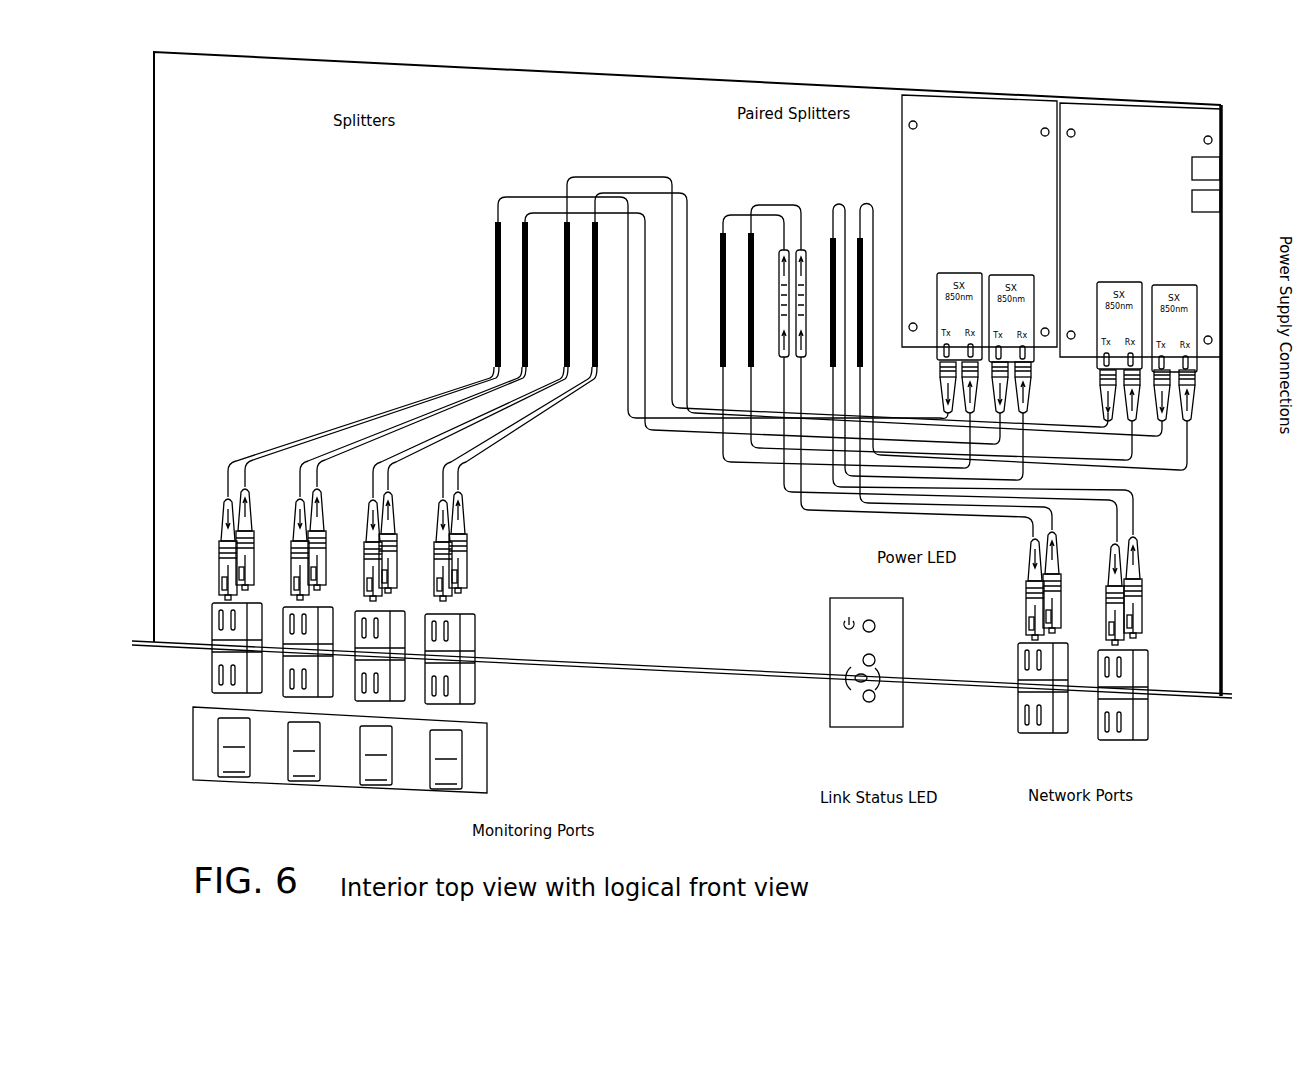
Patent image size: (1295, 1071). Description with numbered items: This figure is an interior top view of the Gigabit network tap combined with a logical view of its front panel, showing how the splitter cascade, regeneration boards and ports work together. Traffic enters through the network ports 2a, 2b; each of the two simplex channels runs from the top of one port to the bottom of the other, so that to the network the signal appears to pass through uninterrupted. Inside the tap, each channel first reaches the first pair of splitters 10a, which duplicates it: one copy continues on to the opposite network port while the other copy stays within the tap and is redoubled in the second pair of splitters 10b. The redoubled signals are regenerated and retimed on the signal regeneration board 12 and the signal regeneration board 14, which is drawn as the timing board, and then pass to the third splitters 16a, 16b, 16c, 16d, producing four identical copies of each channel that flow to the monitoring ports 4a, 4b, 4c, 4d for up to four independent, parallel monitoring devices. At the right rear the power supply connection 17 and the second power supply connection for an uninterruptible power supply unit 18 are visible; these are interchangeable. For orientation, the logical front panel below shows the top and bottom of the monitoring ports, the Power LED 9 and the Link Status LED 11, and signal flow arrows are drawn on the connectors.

The third splitter 16a is at (485, 195).
The third splitter 16b is at (517, 188).
The third splitter 16c is at (568, 168).
The third splitter 16d is at (616, 175).
The first pair of splitters 10a is at (823, 198).
The second pair of splitters 10b is at (720, 195).
The signal regeneration board 12 is at (979, 254).
The signal regeneration board 14 is at (1140, 262).
The power supply connection 17 is at (1227, 173).
The second power supply connection for an uninterruptible power supply unit 18 is at (1227, 204).
The Power LED 9 is at (867, 616).
The Link Status LED 11 is at (874, 705).
The network port 2a is at (1055, 742).
The network port 2b is at (1115, 745).
The monitoring port 4a is at (238, 790).
The monitoring port 4b is at (304, 793).
The monitoring port 4c is at (371, 796).
The monitoring port 4d is at (438, 806).